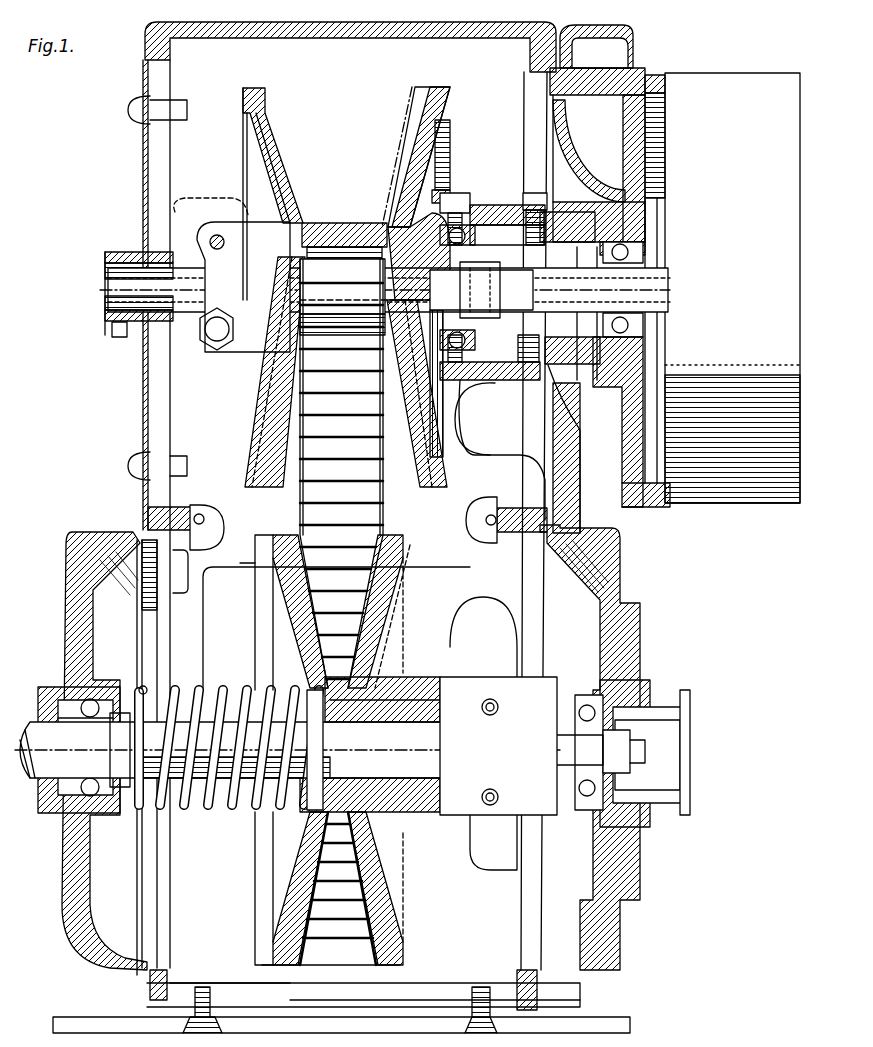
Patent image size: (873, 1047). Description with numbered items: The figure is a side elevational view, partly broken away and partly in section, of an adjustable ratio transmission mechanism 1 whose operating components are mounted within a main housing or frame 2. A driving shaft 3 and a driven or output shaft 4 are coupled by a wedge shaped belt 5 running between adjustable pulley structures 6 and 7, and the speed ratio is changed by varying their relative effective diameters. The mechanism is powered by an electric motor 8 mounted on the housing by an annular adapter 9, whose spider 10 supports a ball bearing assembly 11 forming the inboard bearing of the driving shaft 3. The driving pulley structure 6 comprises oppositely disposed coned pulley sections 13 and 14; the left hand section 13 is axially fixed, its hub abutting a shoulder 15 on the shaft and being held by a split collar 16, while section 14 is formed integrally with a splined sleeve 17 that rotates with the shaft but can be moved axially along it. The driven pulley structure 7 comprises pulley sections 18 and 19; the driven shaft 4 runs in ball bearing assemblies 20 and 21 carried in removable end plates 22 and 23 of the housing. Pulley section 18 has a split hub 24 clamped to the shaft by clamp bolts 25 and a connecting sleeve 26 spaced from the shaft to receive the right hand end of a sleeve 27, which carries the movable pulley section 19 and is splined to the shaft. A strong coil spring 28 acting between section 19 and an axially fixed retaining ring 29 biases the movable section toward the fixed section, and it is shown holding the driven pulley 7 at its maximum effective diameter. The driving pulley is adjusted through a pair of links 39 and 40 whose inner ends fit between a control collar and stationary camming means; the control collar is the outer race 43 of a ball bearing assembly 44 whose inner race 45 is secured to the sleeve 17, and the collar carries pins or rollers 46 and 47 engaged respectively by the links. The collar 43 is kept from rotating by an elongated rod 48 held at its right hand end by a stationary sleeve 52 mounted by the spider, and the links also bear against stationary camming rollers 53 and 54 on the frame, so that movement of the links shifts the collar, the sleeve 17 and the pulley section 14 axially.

The adjustable ratio transmission mechanism 1 is at (142, 25).
The main housing or frame 2 is at (405, 38).
The driving shaft 3 is at (620, 292).
The driven or output shaft 4 is at (58, 748).
The wedge shaped belt 5 is at (375, 492).
The adjustable pulley structure 6 is at (257, 78).
The adjustable pulley structure 7 is at (418, 960).
The electric motor 8 is at (720, 90).
The annular adapter or connector 9 is at (604, 279).
The spider 10 is at (580, 170).
The ball bearing assembly 11 is at (640, 252).
The coned pulley section 13 is at (290, 152).
The coned pulley section 14 is at (412, 160).
The shoulder 15 is at (335, 265).
The split collar 16 is at (205, 240).
The sleeve 17 is at (427, 237).
The pulley section 18 is at (372, 620).
The pulley section 19 is at (300, 632).
The ball bearing assembly 20 is at (622, 707).
The ball bearing assembly 21 is at (88, 700).
The removable end plate 22 is at (645, 862).
The removable end plate 23 is at (90, 953).
The split hub or collar portion 24 is at (527, 712).
The clamp bolts 25 is at (488, 698).
The connecting portion or sleeve 26 is at (420, 820).
The sleeve 27 is at (365, 782).
The coil spring 28 is at (180, 690).
The retaining ring 29 is at (137, 688).
The link 39 is at (500, 205).
The link 40 is at (500, 380).
The outer race or control collar 43 is at (470, 225).
The ball bearing assembly 44 is at (455, 282).
The inner race 45 is at (440, 262).
The pin or roller 46 is at (455, 200).
The pin or roller 47 is at (468, 380).
The elongated pin or rod 48 is at (380, 284).
The stationary sleeve 52 is at (620, 225).
The roller or pin 53 is at (555, 212).
The roller or pin 54 is at (560, 375).